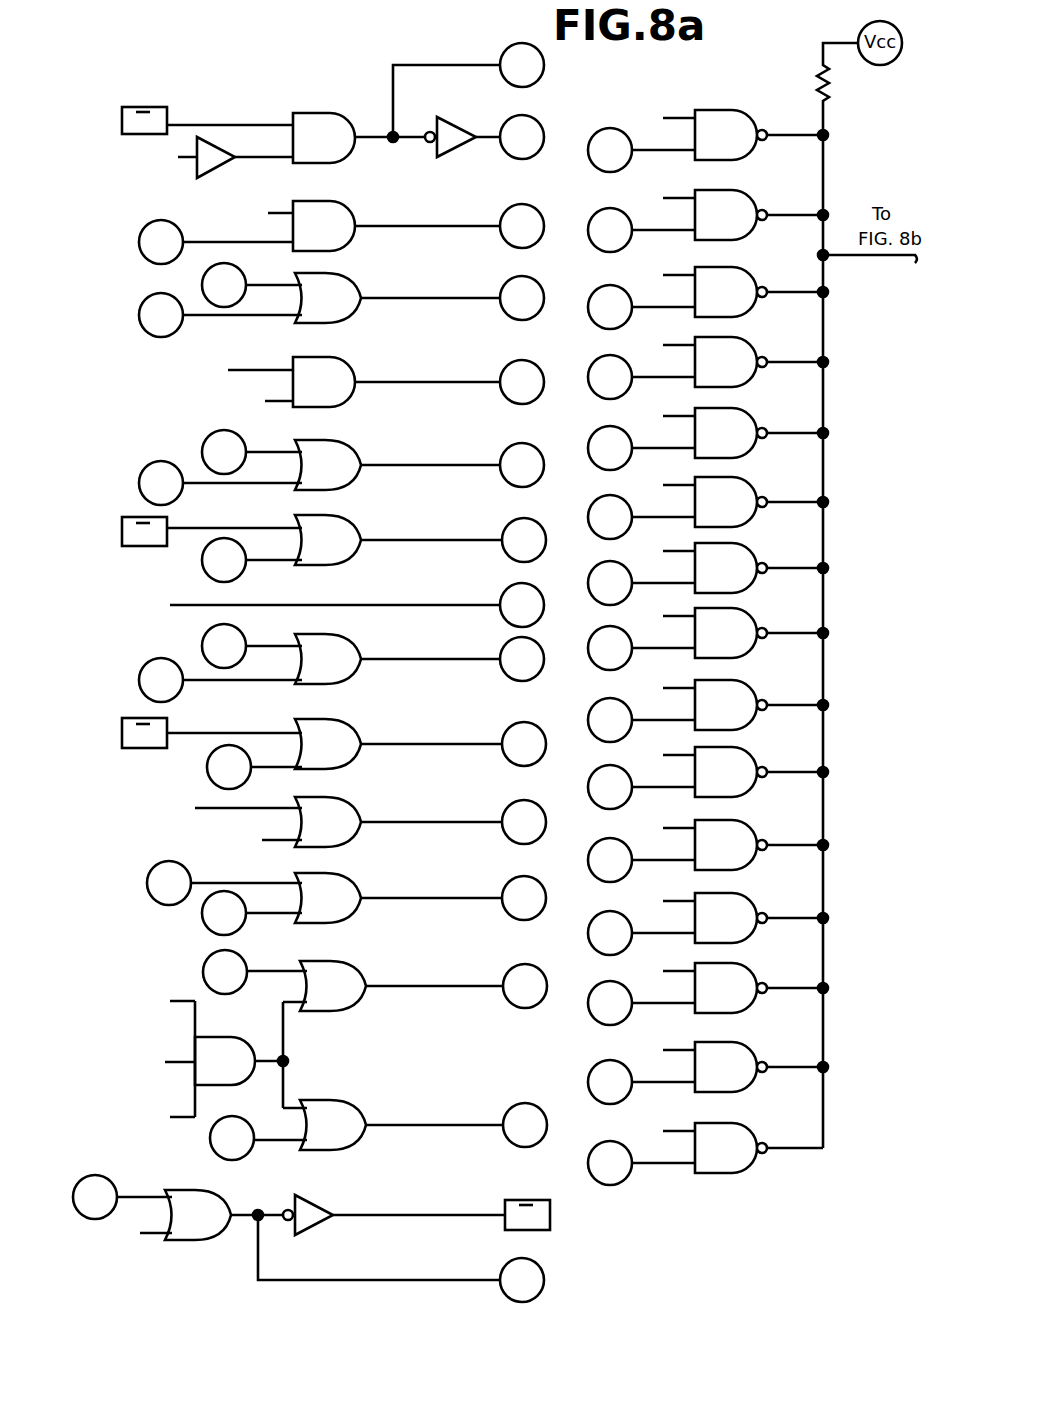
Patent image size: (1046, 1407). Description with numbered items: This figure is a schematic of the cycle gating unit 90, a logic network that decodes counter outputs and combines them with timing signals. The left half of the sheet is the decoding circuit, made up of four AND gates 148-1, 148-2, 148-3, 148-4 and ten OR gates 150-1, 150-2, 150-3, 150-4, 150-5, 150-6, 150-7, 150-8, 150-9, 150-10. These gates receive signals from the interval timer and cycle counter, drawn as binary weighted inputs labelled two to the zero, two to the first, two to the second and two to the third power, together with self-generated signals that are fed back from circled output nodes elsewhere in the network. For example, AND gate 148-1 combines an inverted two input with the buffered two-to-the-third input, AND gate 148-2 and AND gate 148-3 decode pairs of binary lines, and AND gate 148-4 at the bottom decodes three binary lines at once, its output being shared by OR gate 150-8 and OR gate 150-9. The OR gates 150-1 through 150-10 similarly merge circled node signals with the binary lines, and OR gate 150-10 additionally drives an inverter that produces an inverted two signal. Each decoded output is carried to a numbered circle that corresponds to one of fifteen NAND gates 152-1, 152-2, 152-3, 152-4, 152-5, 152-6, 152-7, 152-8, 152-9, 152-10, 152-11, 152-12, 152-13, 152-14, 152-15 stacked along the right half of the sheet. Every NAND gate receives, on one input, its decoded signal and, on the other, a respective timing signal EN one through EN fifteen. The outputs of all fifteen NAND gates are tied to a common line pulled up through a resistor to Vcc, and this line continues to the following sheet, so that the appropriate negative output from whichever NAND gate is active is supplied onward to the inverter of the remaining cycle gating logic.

The cycle gating unit 90 is at (353, 82).
The AND gate 148-1 is at (340, 113).
The AND gate 148-2 is at (346, 210).
The AND gate 148-3 is at (346, 365).
The AND gate 148-4 is at (240, 1024).
The OR gate 150-1 is at (346, 276).
The OR gate 150-2 is at (346, 440).
The OR gate 150-3 is at (351, 516).
The OR gate 150-4 is at (346, 634).
The OR gate 150-5 is at (356, 718).
The OR gate 150-6 is at (351, 798).
The OR gate 150-7 is at (356, 874).
The OR gate 150-8 is at (361, 962).
The OR gate 150-9 is at (351, 1101).
The OR gate 150-10 is at (228, 1190).
The NAND gate 152-1 is at (755, 86).
The NAND gate 152-2 is at (748, 194).
The NAND gate 152-3 is at (748, 271).
The NAND gate 152-4 is at (748, 341).
The NAND gate 152-5 is at (748, 412).
The NAND gate 152-6 is at (748, 481).
The NAND gate 152-7 is at (748, 547).
The NAND gate 152-8 is at (748, 612).
The NAND gate 152-9 is at (748, 684).
The NAND gate 152-10 is at (748, 751).
The NAND gate 152-11 is at (748, 824).
The NAND gate 152-12 is at (748, 897).
The NAND gate 152-13 is at (748, 967).
The NAND gate 152-14 is at (748, 1046).
The NAND gate 152-15 is at (748, 1127).